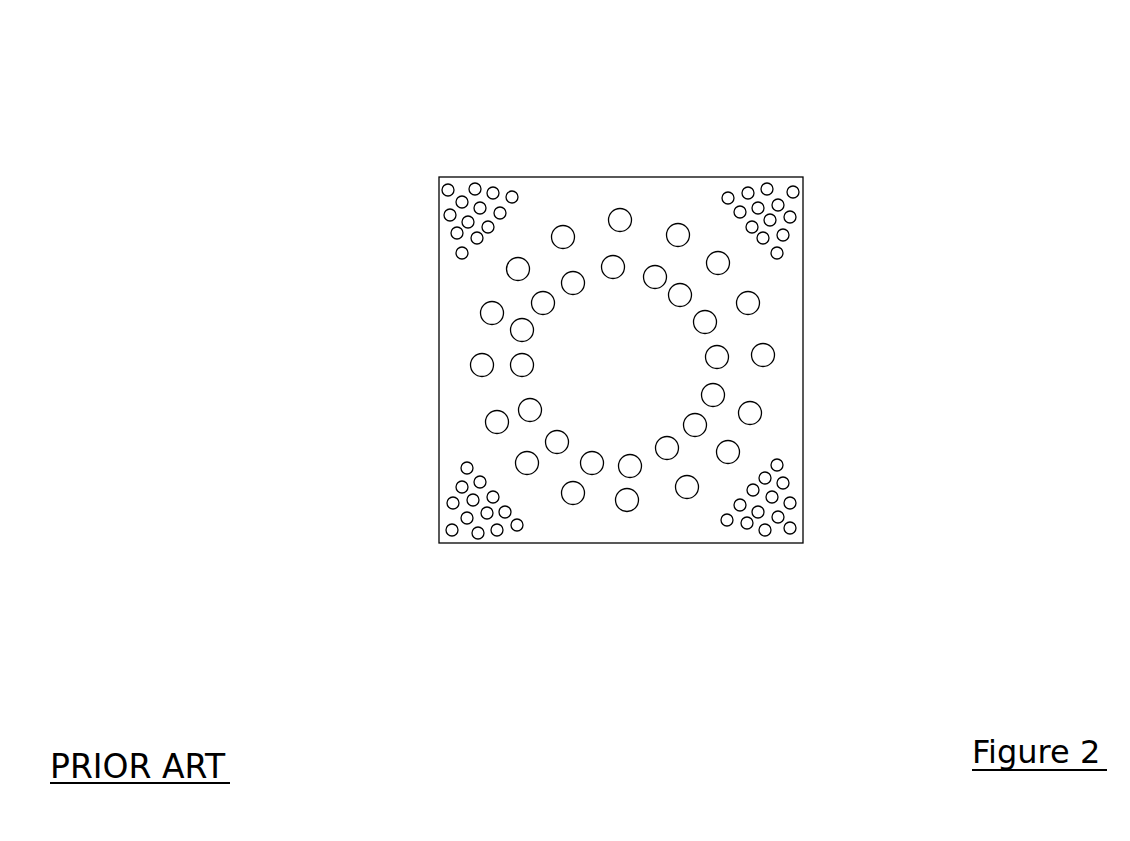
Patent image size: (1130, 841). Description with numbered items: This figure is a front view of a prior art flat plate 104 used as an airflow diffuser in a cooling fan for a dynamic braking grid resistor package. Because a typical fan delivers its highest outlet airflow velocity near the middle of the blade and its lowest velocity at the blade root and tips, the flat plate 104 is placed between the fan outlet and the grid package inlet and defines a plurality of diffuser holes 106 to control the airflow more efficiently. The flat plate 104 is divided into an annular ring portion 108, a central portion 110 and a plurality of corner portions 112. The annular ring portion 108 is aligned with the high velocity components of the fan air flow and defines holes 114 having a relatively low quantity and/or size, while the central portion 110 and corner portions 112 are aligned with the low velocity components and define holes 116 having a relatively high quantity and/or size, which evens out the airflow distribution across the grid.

The flat plate 104 is at (918, 84).
The diffuser holes 106 is at (796, 527).
The annular ring portion 108 is at (760, 323).
The central portion 110 is at (635, 375).
The corner portions 112 is at (457, 257).
The holes 114 is at (684, 423).
The holes 116 is at (620, 209).